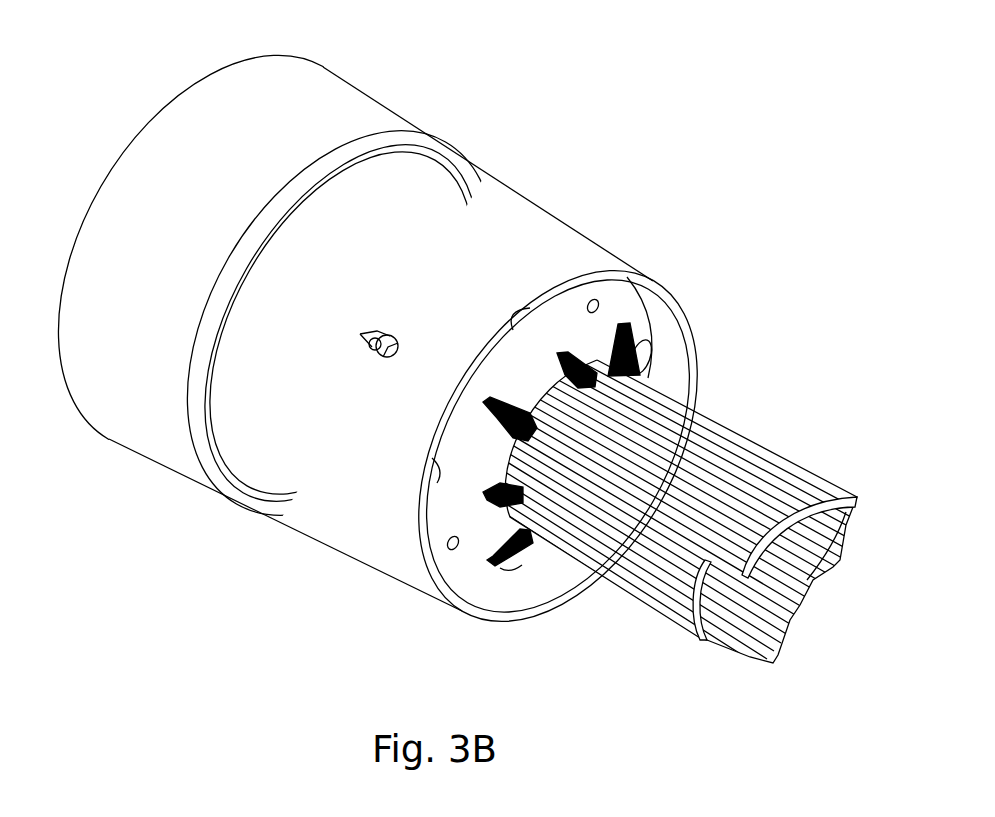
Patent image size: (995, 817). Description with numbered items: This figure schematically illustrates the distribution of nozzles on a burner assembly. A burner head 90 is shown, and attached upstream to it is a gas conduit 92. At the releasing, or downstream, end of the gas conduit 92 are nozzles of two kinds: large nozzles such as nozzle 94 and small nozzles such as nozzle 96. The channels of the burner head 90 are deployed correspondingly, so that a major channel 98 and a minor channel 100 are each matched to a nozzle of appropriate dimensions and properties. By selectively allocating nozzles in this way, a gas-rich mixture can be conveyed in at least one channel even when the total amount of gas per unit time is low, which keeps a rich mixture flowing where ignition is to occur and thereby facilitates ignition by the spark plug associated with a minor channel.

The burner head 90 is at (417, 115).
The gas conduit 92 is at (820, 468).
The nozzle 94 is at (633, 333).
The nozzle 96 is at (577, 357).
The major channel 98 is at (520, 563).
The minor channel 100 is at (447, 550).